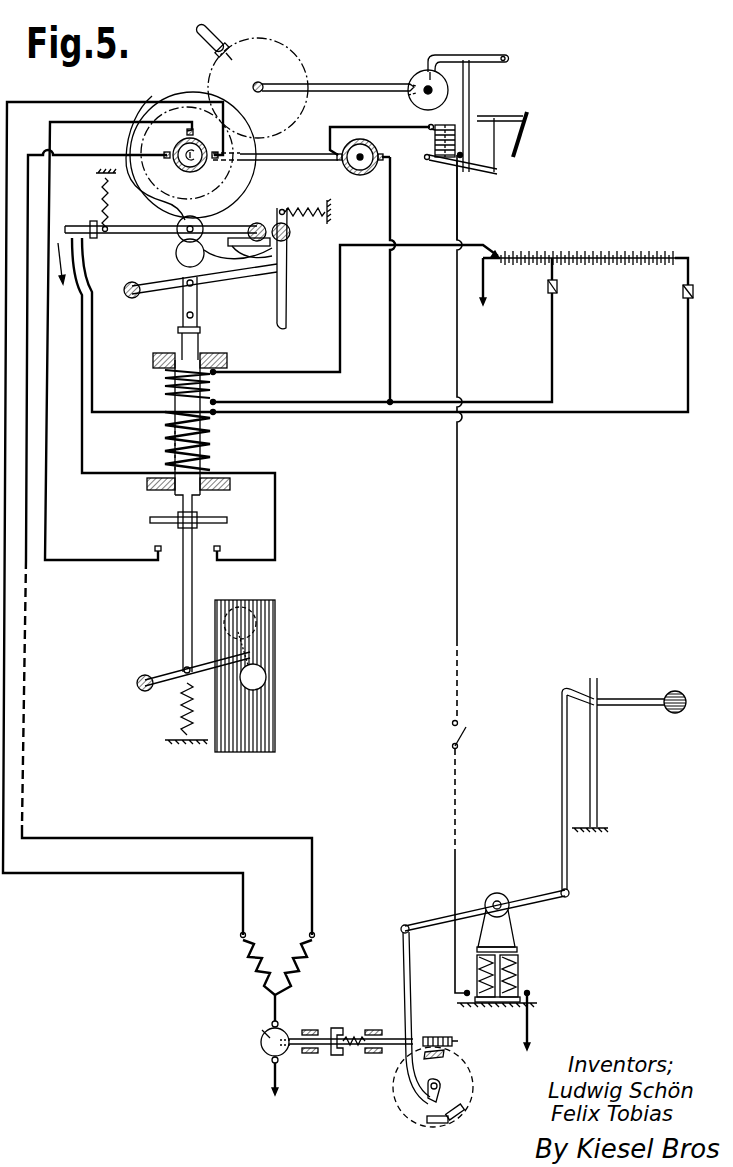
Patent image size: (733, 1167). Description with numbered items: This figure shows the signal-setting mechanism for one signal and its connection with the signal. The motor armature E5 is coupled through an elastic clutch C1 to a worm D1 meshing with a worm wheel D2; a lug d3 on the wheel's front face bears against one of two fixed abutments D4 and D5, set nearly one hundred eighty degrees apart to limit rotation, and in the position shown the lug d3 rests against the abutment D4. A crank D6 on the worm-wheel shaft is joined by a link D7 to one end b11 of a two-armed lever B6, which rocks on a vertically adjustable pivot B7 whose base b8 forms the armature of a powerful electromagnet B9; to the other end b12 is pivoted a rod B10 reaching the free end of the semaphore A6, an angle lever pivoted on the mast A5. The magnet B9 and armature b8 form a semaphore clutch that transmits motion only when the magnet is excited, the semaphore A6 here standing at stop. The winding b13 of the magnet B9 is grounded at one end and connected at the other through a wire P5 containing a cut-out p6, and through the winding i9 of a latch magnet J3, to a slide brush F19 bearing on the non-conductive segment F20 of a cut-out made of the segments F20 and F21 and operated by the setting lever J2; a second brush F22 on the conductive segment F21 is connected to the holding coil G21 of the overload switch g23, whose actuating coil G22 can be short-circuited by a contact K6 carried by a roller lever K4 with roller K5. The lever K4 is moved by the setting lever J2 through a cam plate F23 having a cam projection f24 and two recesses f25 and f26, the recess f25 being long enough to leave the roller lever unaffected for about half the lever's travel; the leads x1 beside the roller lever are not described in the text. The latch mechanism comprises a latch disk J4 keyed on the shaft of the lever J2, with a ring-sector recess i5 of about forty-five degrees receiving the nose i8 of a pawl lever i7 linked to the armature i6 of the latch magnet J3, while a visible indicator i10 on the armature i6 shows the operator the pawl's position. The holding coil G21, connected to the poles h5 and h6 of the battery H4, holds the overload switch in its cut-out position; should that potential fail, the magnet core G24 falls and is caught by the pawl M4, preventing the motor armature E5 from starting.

The setting lever J2 is at (206, 24).
The latch disk J4 is at (413, 100).
The ring sector-shaped recess i5 is at (412, 82).
The pawl lever i7 is at (453, 58).
The nose i8 is at (428, 73).
The latch magnet J3 is at (450, 125).
The winding i9 is at (433, 143).
The armature i6 is at (436, 161).
The visible indicator i10 is at (527, 140).
The cam plate F23 is at (190, 93).
The recess f25 is at (180, 201).
The recess f26 is at (130, 143).
The cam projection f24 is at (133, 170).
The slide brush F19 is at (338, 163).
The non-conductive slide segment F20 is at (327, 205).
The conductive slide segment F21 is at (386, 172).
The second brush F22 is at (392, 165).
The contact K6 is at (78, 226).
The roller lever K4 is at (137, 236).
The roller K5 is at (155, 204).
The flexible leads x1 is at (71, 289).
The pawl M4 is at (284, 304).
The holding coil G21 is at (172, 386).
The actuating coil G22 is at (172, 443).
The magnet core G24 is at (200, 444).
The overload switch g23 is at (150, 520).
The battery H4 is at (648, 253).
The pole h5 is at (500, 254).
The pole h6 is at (557, 253).
The wire P5 is at (452, 503).
The cut-out p6 is at (447, 742).
The mast A5 is at (596, 772).
The semaphore A6 is at (633, 701).
The rod B10 is at (565, 732).
The two-armed lever B6 is at (470, 908).
The end of lever b11 is at (405, 925).
The other end of lever b12 is at (569, 893).
The vertically adjustable pivot B7 is at (499, 903).
The base b8 is at (507, 949).
The winding b13 is at (478, 975).
The electromagnet B9 is at (518, 964).
The link D7 is at (405, 956).
The crank D6 is at (455, 1083).
The worm wheel D2 is at (471, 1081).
The worm D1 is at (432, 1036).
The fixed abutment D5 is at (447, 1057).
The fixed abutment D4 is at (462, 1116).
The lug d3 is at (433, 1124).
The motor armature E5 is at (263, 1055).
The elastic clutch C1 is at (333, 1053).